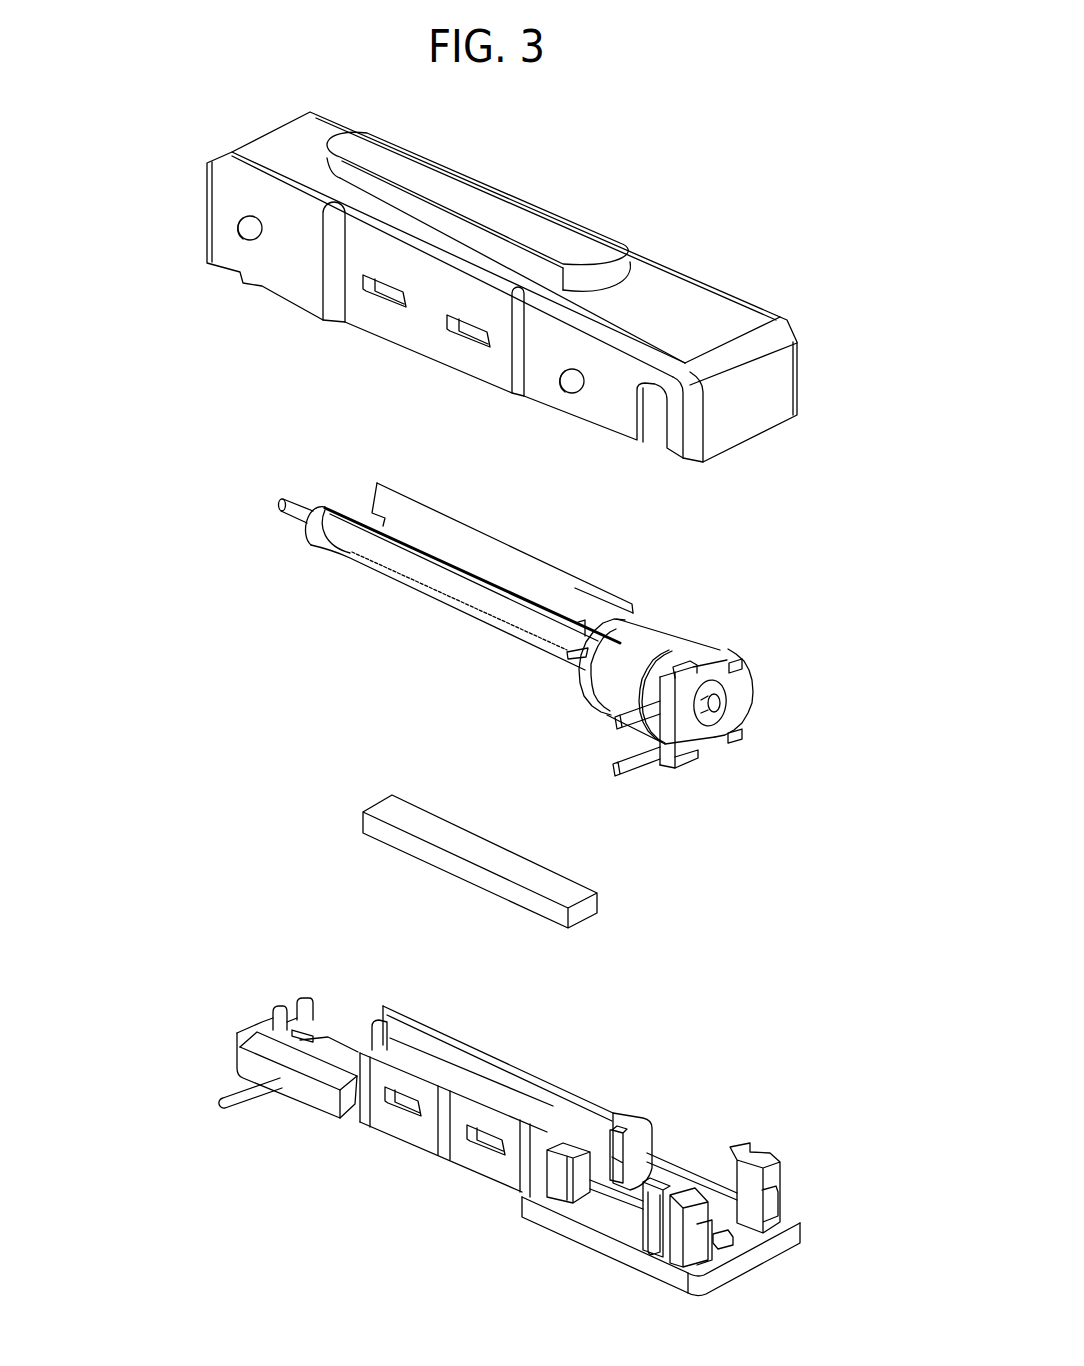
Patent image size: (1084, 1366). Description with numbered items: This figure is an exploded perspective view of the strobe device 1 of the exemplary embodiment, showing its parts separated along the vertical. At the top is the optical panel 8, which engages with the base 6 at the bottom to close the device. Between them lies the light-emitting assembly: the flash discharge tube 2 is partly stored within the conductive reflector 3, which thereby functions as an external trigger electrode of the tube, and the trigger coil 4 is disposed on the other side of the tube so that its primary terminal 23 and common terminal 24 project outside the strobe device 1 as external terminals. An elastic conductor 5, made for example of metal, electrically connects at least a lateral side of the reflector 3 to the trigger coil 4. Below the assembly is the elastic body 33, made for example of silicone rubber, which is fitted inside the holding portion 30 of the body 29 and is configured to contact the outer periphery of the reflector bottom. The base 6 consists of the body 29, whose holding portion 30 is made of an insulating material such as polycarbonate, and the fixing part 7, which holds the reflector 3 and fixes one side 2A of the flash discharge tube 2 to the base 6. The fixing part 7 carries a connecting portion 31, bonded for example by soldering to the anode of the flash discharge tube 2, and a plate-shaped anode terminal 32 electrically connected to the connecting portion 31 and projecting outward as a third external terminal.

The strobe device 1 is at (678, 113).
The flash discharge tube 2 is at (325, 550).
The one side of flash discharge tube 2A is at (320, 508).
The conductive reflector 3 is at (535, 550).
The trigger coil 4 is at (697, 633).
The conductor 5 is at (577, 693).
The base 6 is at (377, 1135).
The fixing part 7 is at (233, 1032).
The optical panel 8 is at (532, 197).
The primary terminal 23 is at (613, 723).
The common terminal 24 is at (615, 777).
The body 29 is at (563, 1230).
The holding portion 30 is at (602, 1178).
The connecting portion 31 is at (277, 1010).
The anode terminal 32 is at (230, 1117).
The elastic body 33 is at (408, 840).